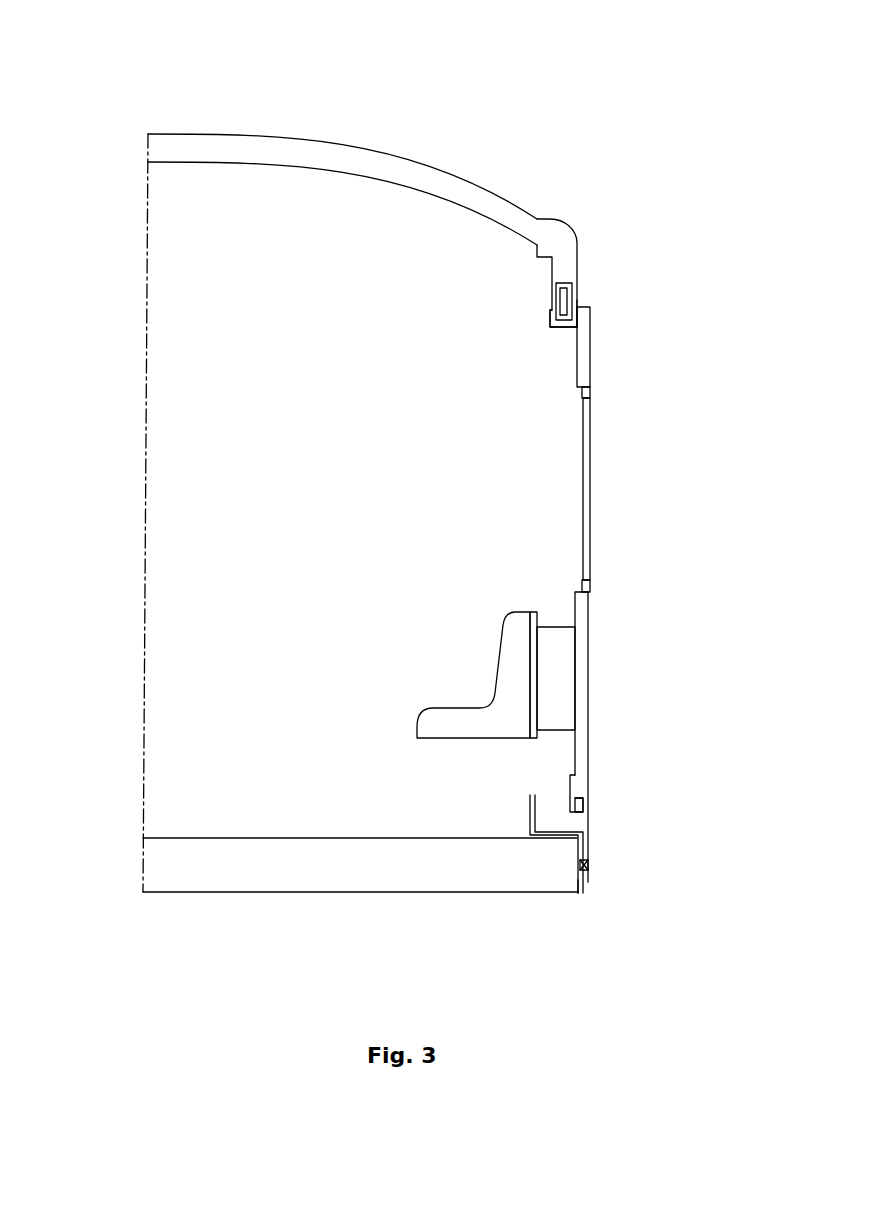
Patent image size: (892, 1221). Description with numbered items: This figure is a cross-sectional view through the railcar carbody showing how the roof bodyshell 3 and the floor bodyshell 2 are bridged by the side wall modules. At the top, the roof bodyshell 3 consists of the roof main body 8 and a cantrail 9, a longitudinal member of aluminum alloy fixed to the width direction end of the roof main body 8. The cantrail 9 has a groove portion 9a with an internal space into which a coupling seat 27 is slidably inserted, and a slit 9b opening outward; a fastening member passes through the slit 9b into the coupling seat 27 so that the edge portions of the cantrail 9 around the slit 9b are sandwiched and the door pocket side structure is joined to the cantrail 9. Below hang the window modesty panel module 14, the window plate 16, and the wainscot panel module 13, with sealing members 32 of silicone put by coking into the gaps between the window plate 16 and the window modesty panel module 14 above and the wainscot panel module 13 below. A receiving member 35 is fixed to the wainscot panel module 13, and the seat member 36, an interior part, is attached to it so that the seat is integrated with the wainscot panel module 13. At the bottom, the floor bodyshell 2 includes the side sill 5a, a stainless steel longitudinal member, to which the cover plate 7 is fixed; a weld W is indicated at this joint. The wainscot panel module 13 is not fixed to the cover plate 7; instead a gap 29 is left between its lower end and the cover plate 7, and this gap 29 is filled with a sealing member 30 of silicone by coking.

The roof bodyshell 3 is at (323, 139).
The roof main body 8 is at (417, 163).
The cantrail 9 is at (577, 245).
The groove portion 9a is at (563, 283).
The slit 9b is at (556, 297).
The coupling seat 27 is at (560, 298).
The window modesty panel module 14 is at (590, 346).
The sealing member 32 is at (590, 392).
The window plate 16 is at (590, 448).
The wainscot panel module 13 is at (580, 707).
The receiving member 35 is at (563, 665).
The seat member 36 is at (503, 675).
The gap 29 is at (580, 795).
The sealing member 30 is at (590, 803).
The cover plate 7 is at (590, 827).
The weld W is at (590, 865).
The floor bodyshell 2 is at (293, 892).
The side sill 5a is at (577, 880).